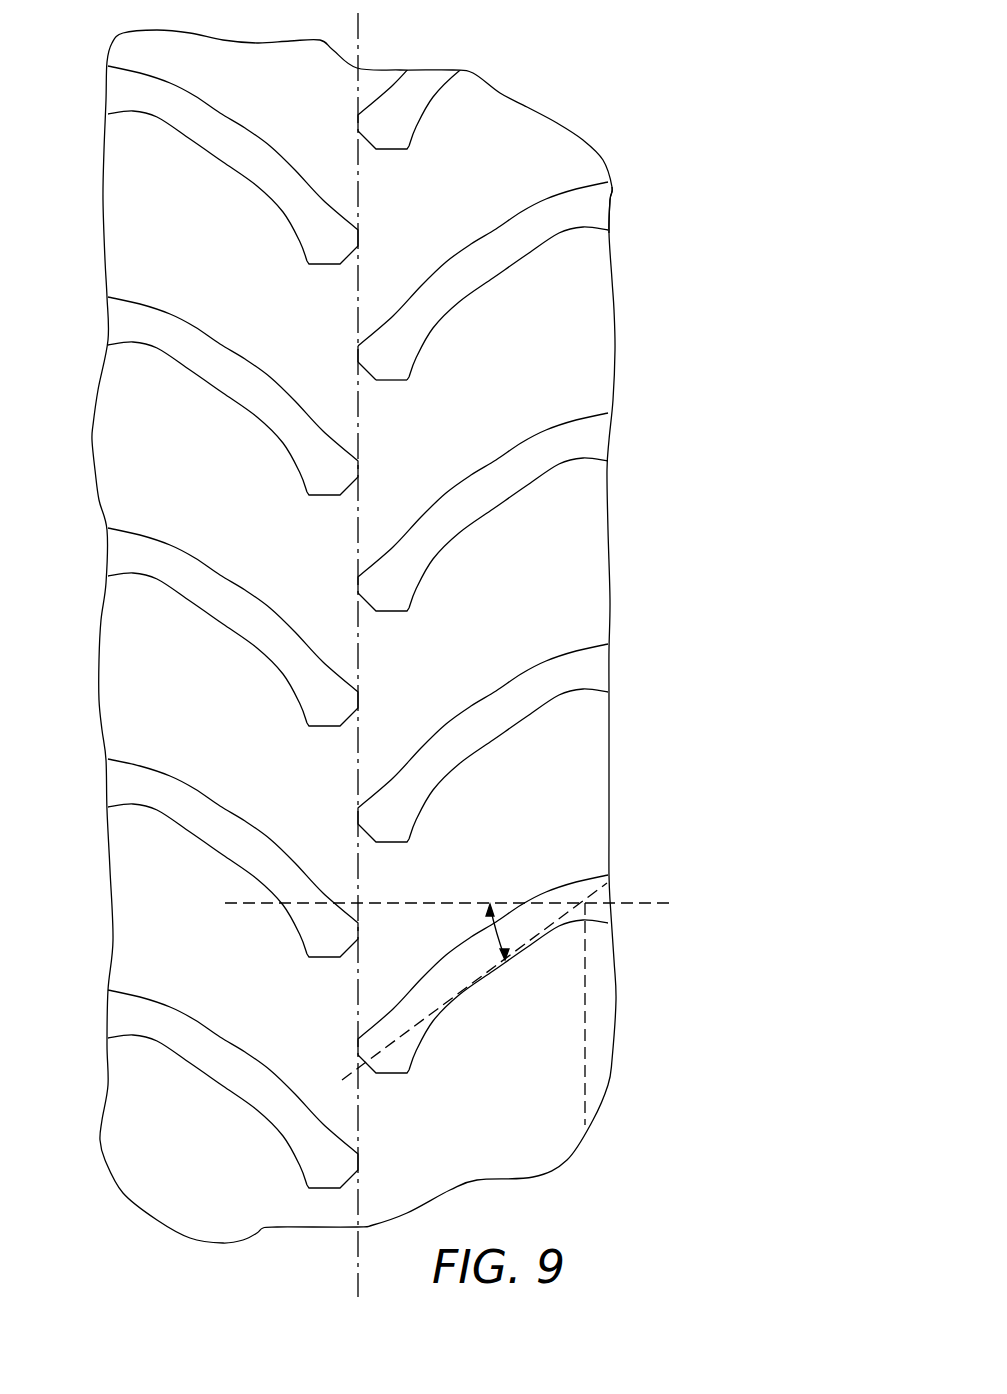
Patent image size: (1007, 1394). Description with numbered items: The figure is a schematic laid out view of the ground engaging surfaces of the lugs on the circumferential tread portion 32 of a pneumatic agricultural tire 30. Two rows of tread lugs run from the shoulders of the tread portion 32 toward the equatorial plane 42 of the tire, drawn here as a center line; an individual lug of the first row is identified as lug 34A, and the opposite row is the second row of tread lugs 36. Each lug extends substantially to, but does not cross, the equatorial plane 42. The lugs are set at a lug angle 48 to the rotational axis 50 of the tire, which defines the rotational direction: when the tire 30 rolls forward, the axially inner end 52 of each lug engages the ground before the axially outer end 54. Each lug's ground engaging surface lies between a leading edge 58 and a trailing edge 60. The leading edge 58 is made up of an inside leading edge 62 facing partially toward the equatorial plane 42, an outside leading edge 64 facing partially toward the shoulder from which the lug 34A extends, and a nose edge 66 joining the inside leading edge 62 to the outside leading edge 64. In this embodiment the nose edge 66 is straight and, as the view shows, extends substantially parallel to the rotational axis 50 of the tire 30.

The pneumatic agricultural tire 30 is at (608, 121).
The circumferential tread portion 32 is at (361, 257).
The tread lug 34A is at (361, 315).
The second row of tread lugs 36 is at (247, 163).
The equatorial plane 42 is at (360, 40).
The lug angle 48 is at (487, 913).
The rotational axis 50 is at (637, 902).
The axially inner end 52 is at (353, 337).
The axially outer end 54 is at (605, 202).
The leading edge 58 is at (353, 337).
The trailing edge 60 is at (477, 237).
The inside leading edge 62 is at (367, 373).
The outside leading edge 64 is at (433, 340).
The nose edge 66 is at (393, 380).